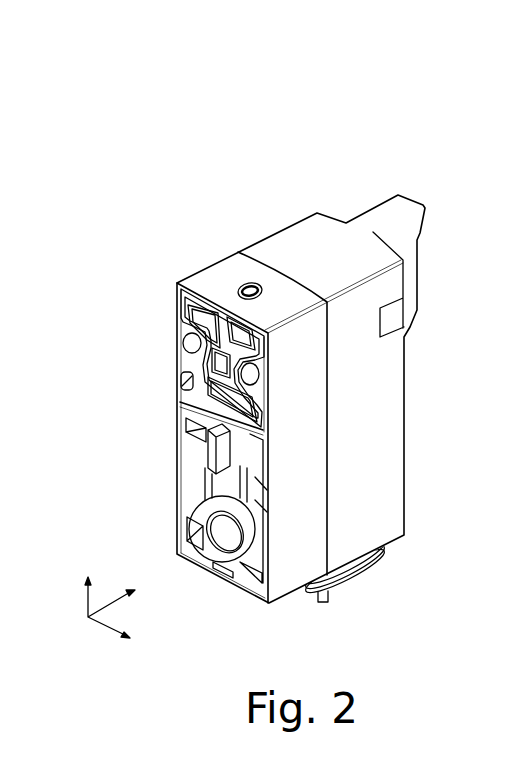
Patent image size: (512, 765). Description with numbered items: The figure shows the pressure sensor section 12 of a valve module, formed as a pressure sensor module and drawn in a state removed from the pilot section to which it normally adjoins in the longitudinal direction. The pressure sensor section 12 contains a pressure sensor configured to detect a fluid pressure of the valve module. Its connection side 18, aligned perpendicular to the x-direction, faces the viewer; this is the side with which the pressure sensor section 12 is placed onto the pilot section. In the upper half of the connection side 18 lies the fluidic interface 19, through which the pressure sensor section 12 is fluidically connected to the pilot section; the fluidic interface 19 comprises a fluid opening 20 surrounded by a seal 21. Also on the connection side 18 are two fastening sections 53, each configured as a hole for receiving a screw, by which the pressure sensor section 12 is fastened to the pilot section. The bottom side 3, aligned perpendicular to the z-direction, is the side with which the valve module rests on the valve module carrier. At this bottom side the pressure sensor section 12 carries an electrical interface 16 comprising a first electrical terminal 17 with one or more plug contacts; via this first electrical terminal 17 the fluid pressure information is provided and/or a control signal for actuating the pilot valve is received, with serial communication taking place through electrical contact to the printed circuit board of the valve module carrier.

The pressure sensor section 12 is at (240, 195).
The bottom side 3 is at (282, 612).
The electrical interface 16 is at (395, 578).
The first electrical terminal 17 is at (368, 596).
The connection side 18 is at (185, 360).
The fluidic interface 19 is at (270, 427).
The fluid opening 20 is at (289, 333).
The seal 21 is at (198, 299).
The fastening section 53 is at (184, 338).